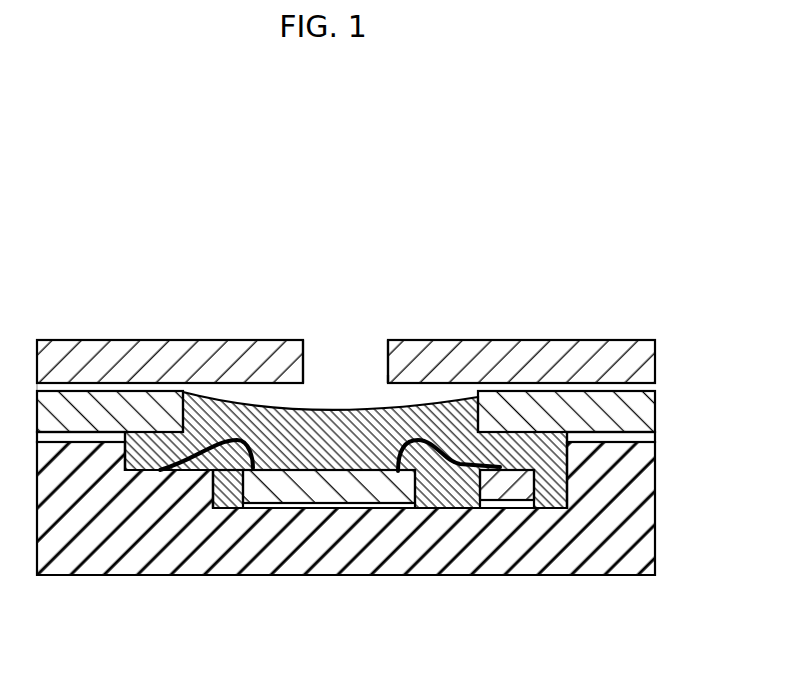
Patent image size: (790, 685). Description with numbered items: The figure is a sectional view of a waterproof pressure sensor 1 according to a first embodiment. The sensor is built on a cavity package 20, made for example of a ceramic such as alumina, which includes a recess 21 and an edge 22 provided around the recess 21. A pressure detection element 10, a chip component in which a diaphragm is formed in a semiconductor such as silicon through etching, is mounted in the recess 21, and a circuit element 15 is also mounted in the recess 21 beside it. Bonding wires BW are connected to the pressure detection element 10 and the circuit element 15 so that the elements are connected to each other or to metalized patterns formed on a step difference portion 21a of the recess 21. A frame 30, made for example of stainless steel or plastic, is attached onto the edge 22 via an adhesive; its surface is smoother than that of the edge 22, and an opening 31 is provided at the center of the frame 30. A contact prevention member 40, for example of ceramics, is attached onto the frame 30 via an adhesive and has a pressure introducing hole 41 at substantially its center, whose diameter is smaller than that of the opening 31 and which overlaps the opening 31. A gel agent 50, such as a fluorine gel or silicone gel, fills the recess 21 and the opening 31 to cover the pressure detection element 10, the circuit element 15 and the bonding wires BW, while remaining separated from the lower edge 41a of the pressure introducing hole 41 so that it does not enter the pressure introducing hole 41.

The waterproof pressure sensor 1 is at (593, 265).
The pressure detection element 10 is at (497, 490).
The circuit element 15 is at (330, 487).
The cavity package 20 is at (640, 541).
The recess 21 is at (560, 495).
The step difference portion 21a is at (135, 463).
The edge 22 is at (618, 428).
The frame 30 is at (628, 414).
The opening 31 is at (268, 392).
The contact prevention member 40 is at (630, 364).
The pressure introducing hole 41 is at (325, 367).
The edge of the pressure introducing hole 41a is at (388, 383).
The gel agent 50 is at (363, 408).
The bonding wires BW is at (232, 437).